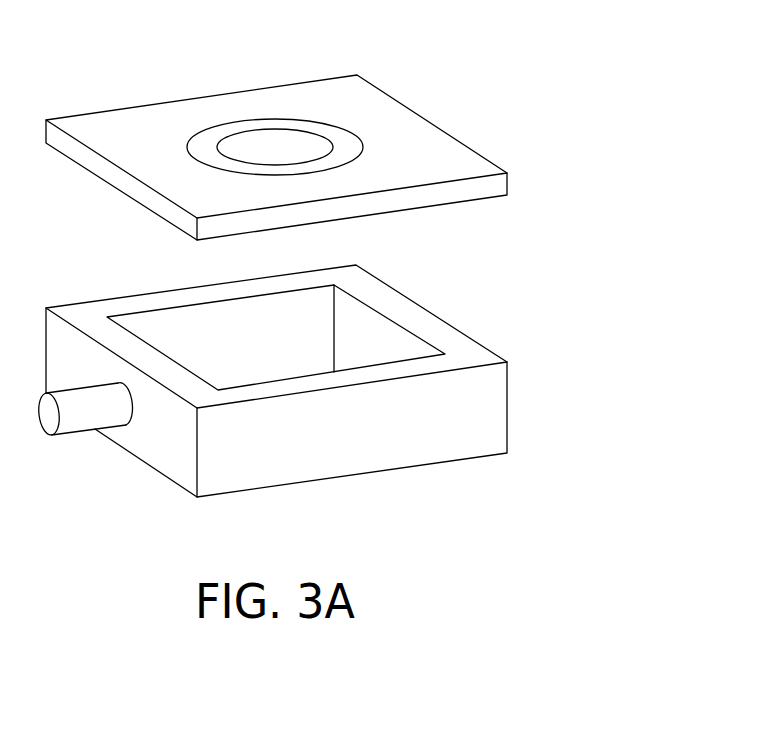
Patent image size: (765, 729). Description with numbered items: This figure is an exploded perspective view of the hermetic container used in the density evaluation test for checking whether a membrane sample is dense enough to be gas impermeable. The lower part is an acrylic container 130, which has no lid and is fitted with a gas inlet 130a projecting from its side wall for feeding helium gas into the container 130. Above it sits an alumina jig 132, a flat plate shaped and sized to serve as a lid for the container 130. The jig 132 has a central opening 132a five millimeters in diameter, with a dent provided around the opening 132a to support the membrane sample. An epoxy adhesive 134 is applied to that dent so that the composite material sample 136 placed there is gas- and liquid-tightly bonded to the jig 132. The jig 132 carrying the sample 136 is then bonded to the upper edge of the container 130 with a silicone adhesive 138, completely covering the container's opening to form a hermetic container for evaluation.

The acrylic container 130 is at (482, 418).
The gas inlet 130a is at (78, 417).
The alumina jig 132 is at (440, 160).
The opening 132a is at (235, 135).
The epoxy adhesive 134 is at (342, 145).
The composite material sample 136 is at (285, 143).
The silicone adhesive 138 is at (417, 322).